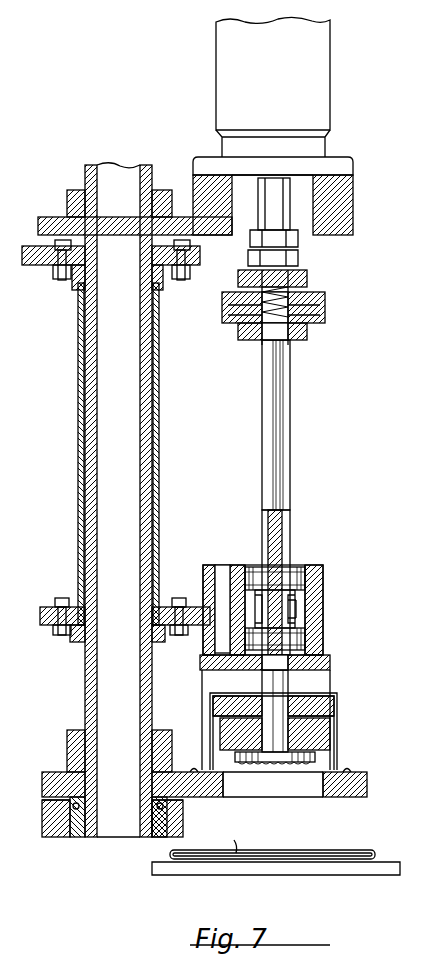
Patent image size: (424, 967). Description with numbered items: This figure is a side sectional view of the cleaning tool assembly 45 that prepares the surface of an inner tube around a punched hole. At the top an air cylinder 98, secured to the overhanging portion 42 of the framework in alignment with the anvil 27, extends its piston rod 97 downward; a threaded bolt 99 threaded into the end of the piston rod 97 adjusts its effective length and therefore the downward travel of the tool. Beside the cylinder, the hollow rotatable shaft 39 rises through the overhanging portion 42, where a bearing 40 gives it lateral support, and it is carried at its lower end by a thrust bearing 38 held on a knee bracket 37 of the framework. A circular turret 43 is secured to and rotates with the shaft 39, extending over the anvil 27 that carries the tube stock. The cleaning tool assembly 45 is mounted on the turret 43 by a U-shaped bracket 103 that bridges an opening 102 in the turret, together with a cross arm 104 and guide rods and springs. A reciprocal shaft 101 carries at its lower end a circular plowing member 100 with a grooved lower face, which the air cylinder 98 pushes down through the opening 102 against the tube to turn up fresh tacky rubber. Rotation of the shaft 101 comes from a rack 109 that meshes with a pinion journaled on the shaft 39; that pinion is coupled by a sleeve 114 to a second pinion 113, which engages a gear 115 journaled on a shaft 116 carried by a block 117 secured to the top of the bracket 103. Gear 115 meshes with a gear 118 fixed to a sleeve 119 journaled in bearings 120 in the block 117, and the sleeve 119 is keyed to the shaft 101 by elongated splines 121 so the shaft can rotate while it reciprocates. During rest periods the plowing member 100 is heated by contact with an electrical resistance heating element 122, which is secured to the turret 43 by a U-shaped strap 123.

The air cylinder 98 is at (334, 92).
The piston rod 97 is at (284, 202).
The threaded bolt 99 is at (300, 257).
The overhanging portion 42 is at (180, 216).
The bearing 40 is at (66, 205).
The hollow rotatable shaft 39 is at (86, 688).
The sleeve 114 is at (79, 470).
The rack 109 is at (48, 266).
The second pinion 113 is at (198, 266).
The gear 115 is at (190, 628).
The cross arm 104 is at (308, 334).
The reciprocal shaft 101 is at (286, 421).
The elongated splines 121 is at (290, 522).
The block 117 is at (323, 585).
The shaft 116 is at (222, 567).
The bearings 120 is at (305, 578).
The gear 118 is at (292, 611).
The sleeve 119 is at (284, 622).
The U-shaped bracket 103 is at (330, 666).
The U-shaped strap 123 is at (337, 700).
The heating element 122 is at (337, 724).
The plowing member 100 is at (318, 760).
The turret 43 is at (362, 790).
The opening 102 is at (322, 794).
The knee bracket 37 is at (55, 838).
The thrust bearing 38 is at (77, 838).
The cleaning tool assembly 45 is at (328, 541).
The anvil 27 is at (388, 862).